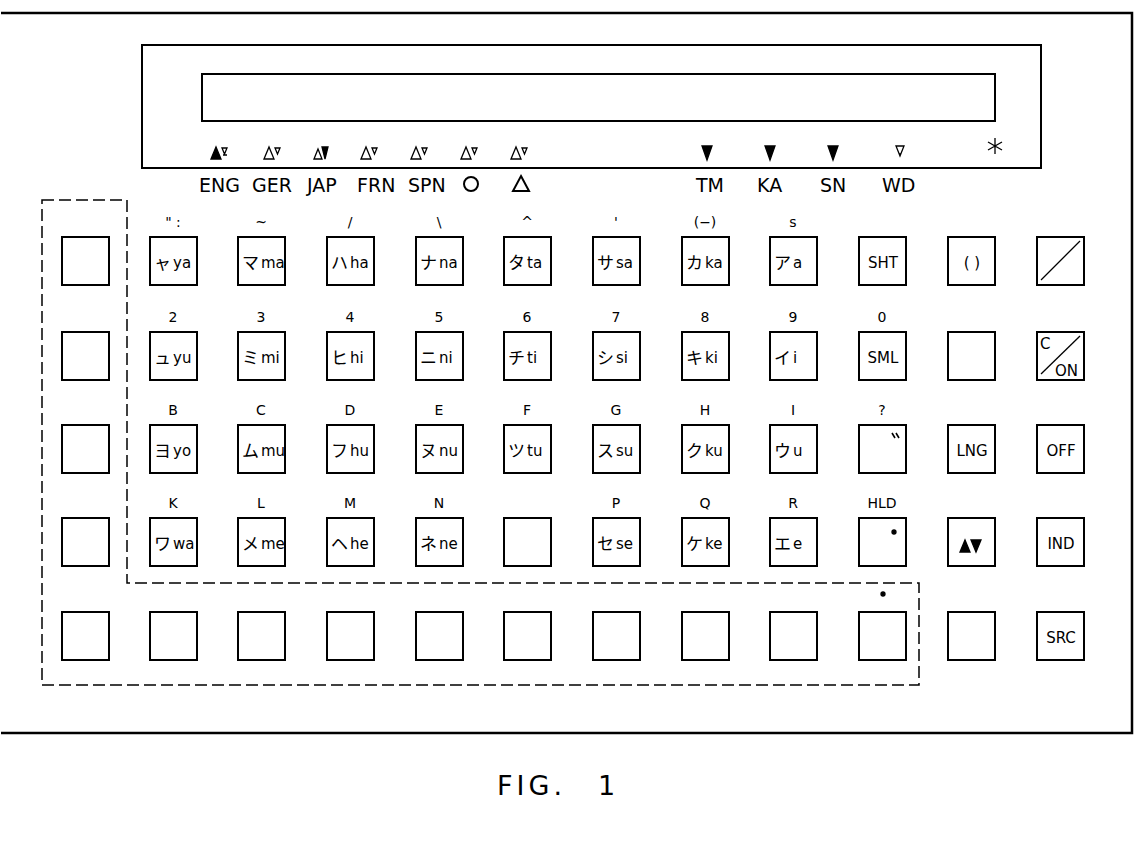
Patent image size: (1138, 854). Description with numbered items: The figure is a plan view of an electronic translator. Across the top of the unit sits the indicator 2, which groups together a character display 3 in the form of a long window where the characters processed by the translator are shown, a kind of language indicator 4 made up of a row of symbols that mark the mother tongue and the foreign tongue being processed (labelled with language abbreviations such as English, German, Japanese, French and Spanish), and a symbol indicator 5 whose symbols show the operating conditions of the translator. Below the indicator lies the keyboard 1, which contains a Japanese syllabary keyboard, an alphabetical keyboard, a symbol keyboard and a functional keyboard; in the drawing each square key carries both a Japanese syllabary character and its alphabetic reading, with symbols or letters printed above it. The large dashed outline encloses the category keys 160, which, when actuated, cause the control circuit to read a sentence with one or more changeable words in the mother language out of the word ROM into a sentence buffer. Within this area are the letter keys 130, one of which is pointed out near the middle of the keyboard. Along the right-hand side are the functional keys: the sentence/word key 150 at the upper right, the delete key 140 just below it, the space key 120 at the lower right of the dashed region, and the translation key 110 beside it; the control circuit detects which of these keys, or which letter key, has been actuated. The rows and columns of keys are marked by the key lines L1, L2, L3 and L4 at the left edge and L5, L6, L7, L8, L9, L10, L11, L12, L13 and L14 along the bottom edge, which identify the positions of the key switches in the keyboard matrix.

The keyboard 1 is at (572, 322).
The indicator 2 is at (577, 120).
The character display 3 is at (395, 87).
The kind of language indicator 4 is at (297, 147).
The symbol indicator 5 is at (850, 145).
The translation key 110 is at (982, 648).
The space key 120 is at (908, 657).
The letter keys 130 is at (551, 563).
The delete key 140 is at (985, 338).
The sentence/word key 150 is at (1078, 257).
The category keys 160 is at (50, 210).
The key line 1 L1 is at (62, 263).
The key line 2 L2 is at (62, 358).
The key line 3 L3 is at (66, 436).
The key line 4 L4 is at (67, 533).
The key line 5 L5 is at (93, 661).
The key line 6 L6 is at (188, 654).
The key line 7 L7 is at (280, 652).
The key line 8 L8 is at (365, 651).
The key line 9 L9 is at (455, 654).
The key line 10 L10 is at (545, 654).
The key line 11 L11 is at (632, 661).
The key line 12 L12 is at (705, 654).
The key line 13 L13 is at (792, 653).
The key line 14 L14 is at (903, 638).